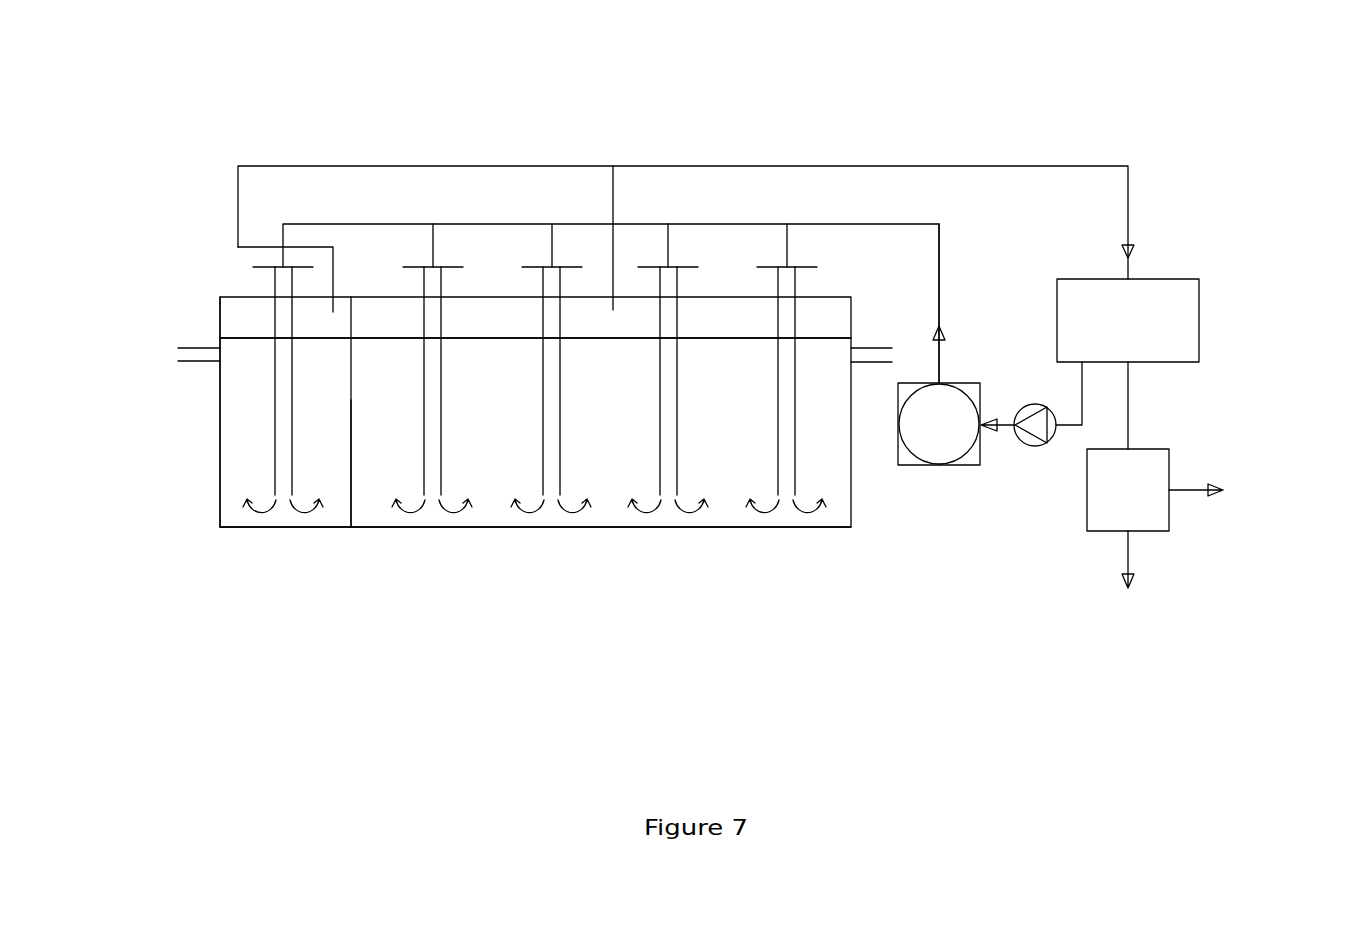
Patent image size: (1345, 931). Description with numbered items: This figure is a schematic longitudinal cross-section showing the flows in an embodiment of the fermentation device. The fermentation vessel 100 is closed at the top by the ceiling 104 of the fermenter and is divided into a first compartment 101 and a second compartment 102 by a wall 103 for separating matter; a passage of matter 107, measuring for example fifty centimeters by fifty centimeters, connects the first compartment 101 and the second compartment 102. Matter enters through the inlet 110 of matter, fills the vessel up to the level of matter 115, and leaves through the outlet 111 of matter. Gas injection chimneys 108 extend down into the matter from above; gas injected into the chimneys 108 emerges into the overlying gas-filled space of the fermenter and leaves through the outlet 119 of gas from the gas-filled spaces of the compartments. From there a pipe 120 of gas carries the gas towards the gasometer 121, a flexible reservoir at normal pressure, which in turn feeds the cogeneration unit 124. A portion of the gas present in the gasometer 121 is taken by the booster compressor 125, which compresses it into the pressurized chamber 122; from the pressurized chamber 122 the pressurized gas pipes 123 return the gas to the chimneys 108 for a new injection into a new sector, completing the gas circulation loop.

The fermentation vessel 100 is at (732, 528).
The first compartment 101 is at (235, 433).
The second compartment 102 is at (625, 482).
The wall for separating matter 103 is at (350, 492).
The ceiling of the fermenter 104 is at (707, 290).
The passage of matter 107 is at (352, 445).
The gas injection chimneys 108 is at (277, 458).
The inlet of matter 110 is at (178, 362).
The outlet of matter 111 is at (873, 348).
The level of matter 115 is at (262, 338).
The outlet of gas 119 is at (331, 278).
The pipe of gas 120 is at (342, 166).
The gasometer 121 is at (1185, 314).
The pressurized chamber 122 is at (930, 445).
The pressurized gas pipes 123 is at (945, 255).
The cogeneration unit 124 is at (1150, 503).
The booster compressor 125 is at (1035, 442).